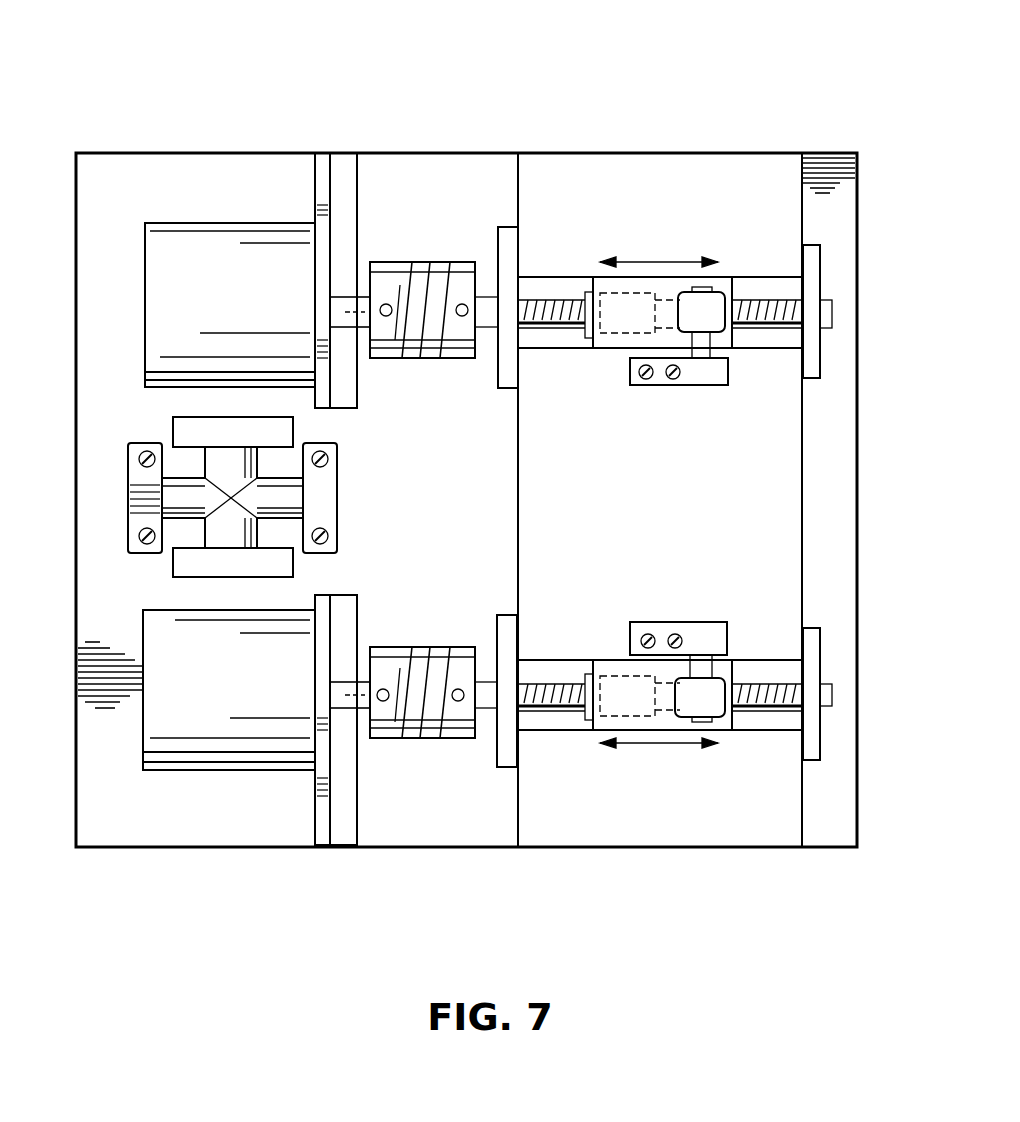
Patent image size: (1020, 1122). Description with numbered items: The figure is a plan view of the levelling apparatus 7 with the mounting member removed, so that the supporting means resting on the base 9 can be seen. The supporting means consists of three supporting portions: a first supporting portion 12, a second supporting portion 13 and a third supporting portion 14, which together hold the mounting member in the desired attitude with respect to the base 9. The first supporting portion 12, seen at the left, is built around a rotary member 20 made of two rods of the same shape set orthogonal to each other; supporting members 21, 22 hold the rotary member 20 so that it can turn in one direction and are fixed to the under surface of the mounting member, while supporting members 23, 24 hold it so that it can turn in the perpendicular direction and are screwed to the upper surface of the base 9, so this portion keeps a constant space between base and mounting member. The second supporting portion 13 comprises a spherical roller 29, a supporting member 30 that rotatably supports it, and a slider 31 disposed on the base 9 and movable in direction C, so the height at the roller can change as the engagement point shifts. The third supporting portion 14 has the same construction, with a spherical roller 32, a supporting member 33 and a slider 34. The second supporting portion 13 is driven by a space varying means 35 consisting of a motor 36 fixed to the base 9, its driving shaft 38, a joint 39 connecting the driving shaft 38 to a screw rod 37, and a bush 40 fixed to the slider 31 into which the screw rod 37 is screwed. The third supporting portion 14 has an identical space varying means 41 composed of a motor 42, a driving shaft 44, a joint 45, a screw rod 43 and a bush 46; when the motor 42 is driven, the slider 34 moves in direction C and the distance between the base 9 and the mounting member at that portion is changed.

The levelling apparatus 7 is at (658, 118).
The base 9 is at (220, 832).
The first supporting portion 12 is at (306, 505).
The second supporting portion 13 is at (667, 653).
The third supporting portion 14 is at (665, 368).
The rotary member 20 is at (287, 498).
The supporting member 21 is at (150, 553).
The supporting member 22 is at (337, 475).
The supporting member 23 is at (337, 556).
The supporting member 24 is at (293, 430).
The spherical roller 29 is at (712, 690).
The supporting member 30 is at (668, 622).
The slider 31 is at (750, 577).
The spherical roller 32 is at (716, 332).
The supporting member 33 is at (658, 385).
The slider 34 is at (752, 448).
The space varying means 35 is at (487, 771).
The motor 36 is at (257, 770).
The screw rod 37 is at (540, 715).
The driving shaft 38 is at (347, 715).
The joint 39 is at (445, 738).
The bush 40 is at (652, 776).
The space varying means 41 is at (488, 222).
The motor 42 is at (277, 223).
The screw rod 43 is at (540, 298).
The driving shaft 44 is at (348, 296).
The joint 45 is at (443, 262).
The bush 46 is at (648, 223).